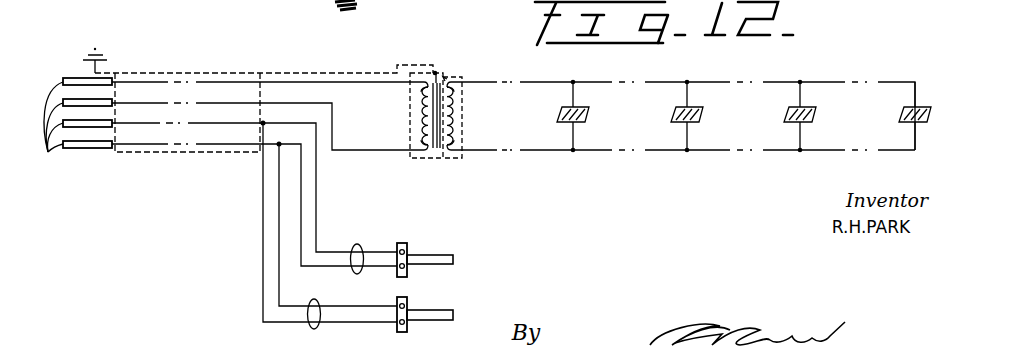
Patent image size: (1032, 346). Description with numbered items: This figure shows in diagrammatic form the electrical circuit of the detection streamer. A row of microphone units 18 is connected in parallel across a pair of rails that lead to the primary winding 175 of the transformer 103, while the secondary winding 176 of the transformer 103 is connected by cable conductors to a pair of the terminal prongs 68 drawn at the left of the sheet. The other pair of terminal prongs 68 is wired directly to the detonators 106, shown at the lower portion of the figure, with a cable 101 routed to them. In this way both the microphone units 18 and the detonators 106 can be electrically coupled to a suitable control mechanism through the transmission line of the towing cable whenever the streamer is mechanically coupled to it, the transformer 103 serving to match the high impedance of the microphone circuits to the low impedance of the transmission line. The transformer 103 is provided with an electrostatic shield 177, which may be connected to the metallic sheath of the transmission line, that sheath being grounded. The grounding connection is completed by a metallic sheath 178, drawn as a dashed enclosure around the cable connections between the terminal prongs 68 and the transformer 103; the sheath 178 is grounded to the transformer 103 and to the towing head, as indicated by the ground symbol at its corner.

The microphone unit 18 is at (664, 108).
The terminal prong 68 is at (78, 126).
The cable 101 is at (357, 275).
The transformer 103 is at (441, 94).
The detonator 106 is at (433, 264).
The primary winding 175 is at (458, 118).
The secondary winding 176 is at (418, 112).
The electrostatic shield 177 is at (444, 72).
The metallic sheath 178 is at (231, 72).